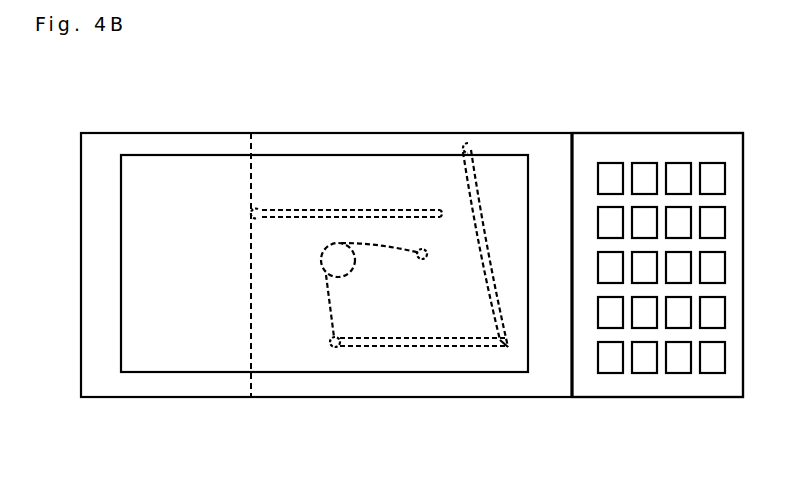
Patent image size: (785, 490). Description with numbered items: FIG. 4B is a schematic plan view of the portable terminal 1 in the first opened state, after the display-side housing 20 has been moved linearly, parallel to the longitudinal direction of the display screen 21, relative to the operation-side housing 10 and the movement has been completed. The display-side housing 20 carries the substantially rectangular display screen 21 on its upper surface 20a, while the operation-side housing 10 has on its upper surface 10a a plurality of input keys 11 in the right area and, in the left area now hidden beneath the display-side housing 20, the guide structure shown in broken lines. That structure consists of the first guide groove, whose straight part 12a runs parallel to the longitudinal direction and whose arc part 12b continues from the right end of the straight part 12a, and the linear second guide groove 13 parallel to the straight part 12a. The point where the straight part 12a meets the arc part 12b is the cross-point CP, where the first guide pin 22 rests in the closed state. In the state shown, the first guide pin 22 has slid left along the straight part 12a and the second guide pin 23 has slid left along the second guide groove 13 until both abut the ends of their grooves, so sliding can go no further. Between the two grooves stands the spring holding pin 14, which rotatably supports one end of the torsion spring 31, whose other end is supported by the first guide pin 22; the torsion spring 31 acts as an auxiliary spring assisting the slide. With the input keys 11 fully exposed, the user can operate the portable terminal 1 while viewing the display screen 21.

The portable terminal 1 is at (588, 100).
The operation-side housing 10 is at (718, 398).
The upper surface of the operation-side housing 10a is at (640, 140).
The input keys 11 is at (607, 372).
The straight part of the first guide groove 12a is at (387, 345).
The arc part of the first guide groove 12b is at (468, 172).
The second guide groove 13 is at (348, 207).
The spring holding pin 14 is at (420, 250).
The display-side housing 20 is at (81, 243).
The upper surface of the display-side housing 20a is at (95, 147).
The display screen 21 is at (508, 170).
The first guide pin 22 is at (335, 348).
The second guide pin 23 is at (263, 205).
The torsion spring 31 is at (322, 262).
The cross-point CP is at (507, 352).